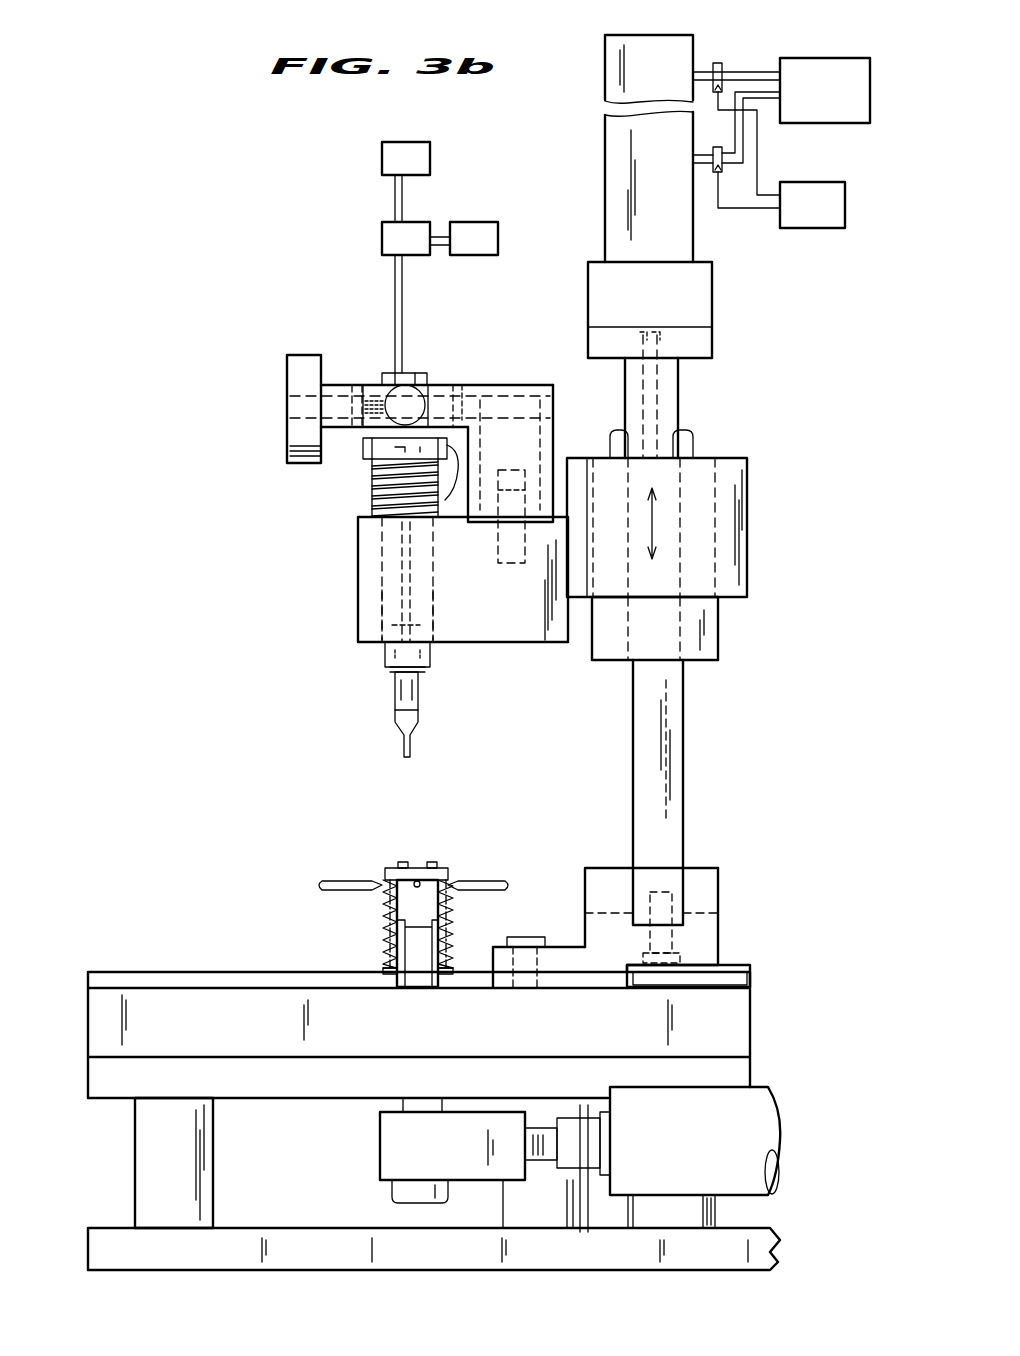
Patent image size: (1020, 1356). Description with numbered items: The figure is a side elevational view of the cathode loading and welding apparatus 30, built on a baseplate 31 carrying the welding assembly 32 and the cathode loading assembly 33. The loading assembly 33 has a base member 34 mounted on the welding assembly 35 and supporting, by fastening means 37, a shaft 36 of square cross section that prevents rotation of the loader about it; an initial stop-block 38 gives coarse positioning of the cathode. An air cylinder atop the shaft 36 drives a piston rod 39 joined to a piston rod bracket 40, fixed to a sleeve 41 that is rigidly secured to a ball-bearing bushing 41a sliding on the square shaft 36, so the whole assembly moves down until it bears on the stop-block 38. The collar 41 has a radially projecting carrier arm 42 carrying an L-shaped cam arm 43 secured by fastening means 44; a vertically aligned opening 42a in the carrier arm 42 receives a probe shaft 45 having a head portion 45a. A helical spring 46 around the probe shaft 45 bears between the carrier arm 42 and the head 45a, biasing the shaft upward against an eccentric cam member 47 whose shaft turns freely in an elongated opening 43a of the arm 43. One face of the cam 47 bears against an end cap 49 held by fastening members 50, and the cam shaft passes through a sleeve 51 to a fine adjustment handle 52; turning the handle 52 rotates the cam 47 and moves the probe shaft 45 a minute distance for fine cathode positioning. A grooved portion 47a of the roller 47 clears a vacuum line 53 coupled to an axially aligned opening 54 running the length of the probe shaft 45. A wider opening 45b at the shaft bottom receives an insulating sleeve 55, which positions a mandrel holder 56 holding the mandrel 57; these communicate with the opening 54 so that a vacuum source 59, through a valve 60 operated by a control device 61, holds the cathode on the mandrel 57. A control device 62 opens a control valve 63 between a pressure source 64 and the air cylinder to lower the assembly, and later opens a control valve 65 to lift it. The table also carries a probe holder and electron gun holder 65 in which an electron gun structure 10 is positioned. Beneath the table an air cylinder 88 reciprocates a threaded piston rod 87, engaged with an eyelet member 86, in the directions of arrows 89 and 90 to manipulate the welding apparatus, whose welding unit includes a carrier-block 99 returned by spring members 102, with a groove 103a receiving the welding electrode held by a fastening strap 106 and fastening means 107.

The electron gun structure 10 is at (366, 936).
The apparatus 30 is at (858, 272).
The baseplate 31 is at (88, 1250).
The welding assembly 32 is at (291, 950).
The cathode loading assembly 33 is at (292, 530).
The base member 34 is at (493, 962).
The welding assembly 35 is at (530, 937).
The shaft 36 is at (684, 760).
The fastening means 37 is at (700, 955).
The initial stop-block 38 is at (605, 200).
The piston rod 39 is at (680, 406).
The piston rod bracket 40 is at (700, 456).
The sleeve 41 is at (748, 553).
The bushing 41a is at (718, 652).
The carrier arm 42 is at (520, 648).
The vertically aligned opening 42a is at (434, 606).
The L-shaped cam arm 43 is at (531, 388).
The elongated opening 43a is at (474, 390).
The fastening means 44 is at (500, 516).
The probe shaft 45 is at (431, 655).
The head portion 45a is at (463, 473).
The wider diameter opening 45b is at (390, 657).
The helical spring 46 is at (375, 495).
The cam member 47 is at (392, 373).
The grooved portion 47a is at (413, 388).
The end cap 49 is at (365, 385).
The fastening members 50 is at (355, 395).
The sleeve 51 is at (322, 430).
The fine adjustment handle 52 is at (288, 440).
The vacuum line 53 is at (395, 287).
The axially aligned opening 54 is at (370, 460).
The insulating sleeve 55 is at (425, 670).
The mandrel holder 56 is at (395, 690).
The mandrel 57 is at (400, 726).
The vacuum source 59 is at (382, 160).
The valve 60 is at (382, 240).
The control device 61 is at (472, 256).
The control device 62 is at (845, 212).
The control valve 63 is at (719, 65).
The pressure source 64 is at (870, 89).
The control valve 65 is at (722, 143).
The eyelet member 86 is at (380, 1145).
The threaded piston rod 87 is at (538, 1128).
The air cylinder 88 is at (718, 1160).
The arrow 89 is at (558, 1220).
The arrow 90 is at (555, 1244).
The carrier-block 99 is at (430, 956).
The spring members 102 is at (383, 905).
The elongated groove 103a is at (420, 888).
The fastening strap 106 is at (448, 874).
The fastening means 107 is at (431, 862).